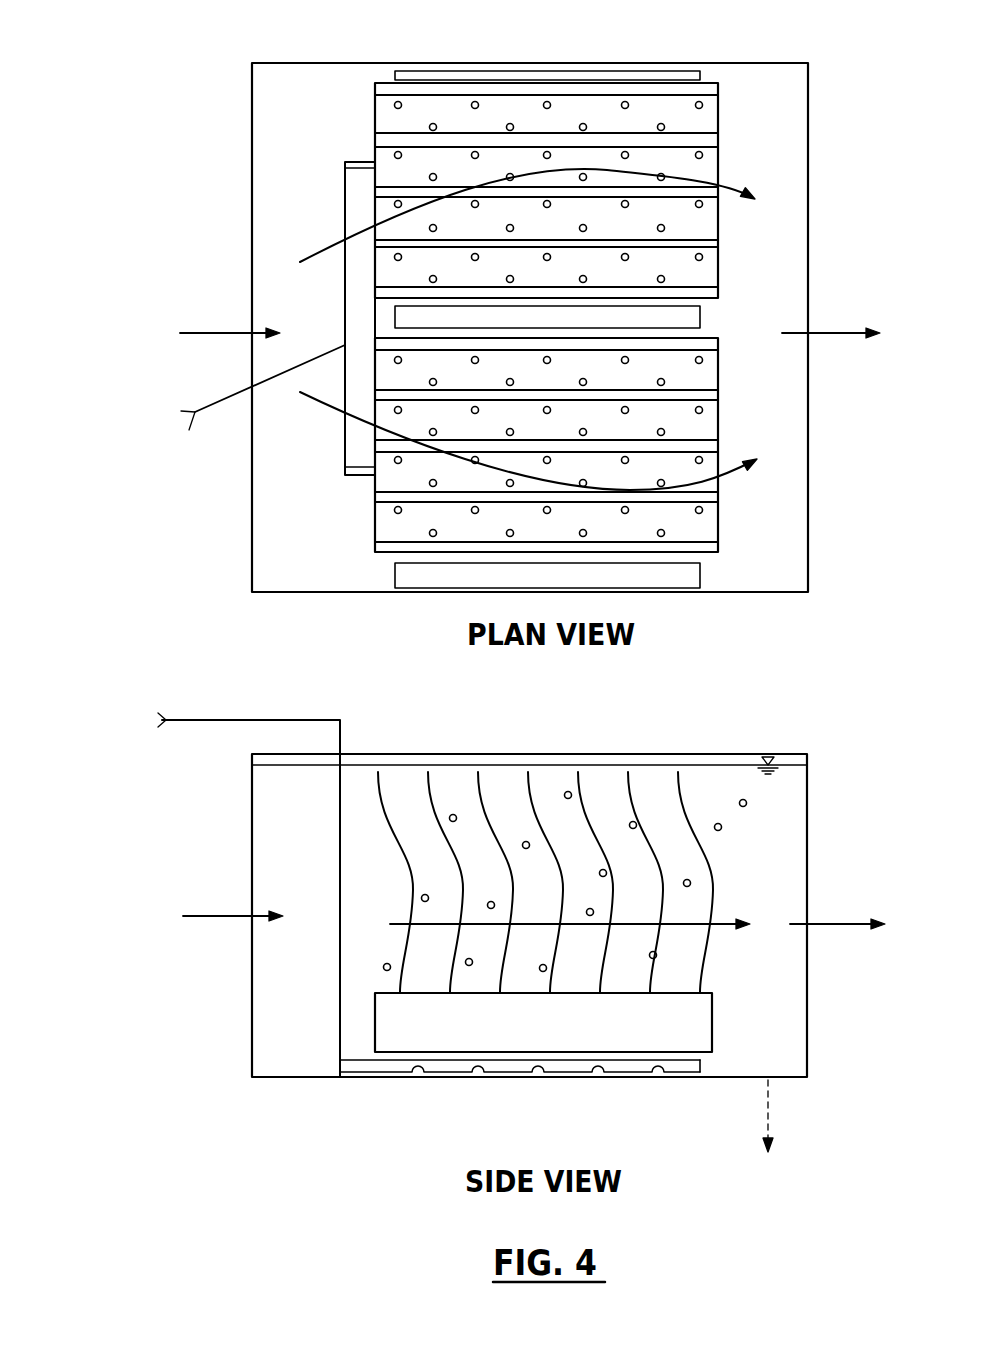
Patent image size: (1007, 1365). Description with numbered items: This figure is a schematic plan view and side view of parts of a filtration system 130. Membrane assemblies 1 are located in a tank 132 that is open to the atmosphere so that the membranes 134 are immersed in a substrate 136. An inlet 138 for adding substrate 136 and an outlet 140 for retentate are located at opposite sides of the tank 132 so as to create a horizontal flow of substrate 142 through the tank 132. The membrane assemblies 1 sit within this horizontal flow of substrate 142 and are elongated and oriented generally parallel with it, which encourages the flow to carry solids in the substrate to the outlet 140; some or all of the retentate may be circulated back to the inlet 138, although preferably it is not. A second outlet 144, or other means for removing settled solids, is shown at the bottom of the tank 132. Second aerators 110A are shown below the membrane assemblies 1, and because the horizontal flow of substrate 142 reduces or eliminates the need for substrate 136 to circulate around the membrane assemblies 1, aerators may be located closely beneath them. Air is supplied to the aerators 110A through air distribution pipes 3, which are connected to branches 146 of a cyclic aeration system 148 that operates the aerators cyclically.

The membrane assembly 1 is at (352, 185).
The air distribution pipe 3 is at (357, 475).
The second aerator 110A is at (760, 105).
The filtration system 130 is at (180, 468).
The tank 132 is at (814, 225).
The membrane 134 is at (702, 409).
The substrate 136 is at (783, 273).
The inlet 138 is at (186, 333).
The outlet 140 is at (828, 333).
The horizontal flow of substrate 142 is at (757, 178).
The second outlet 144 is at (767, 1134).
The branch 146 is at (343, 303).
The cyclic aeration system 148 is at (212, 405).